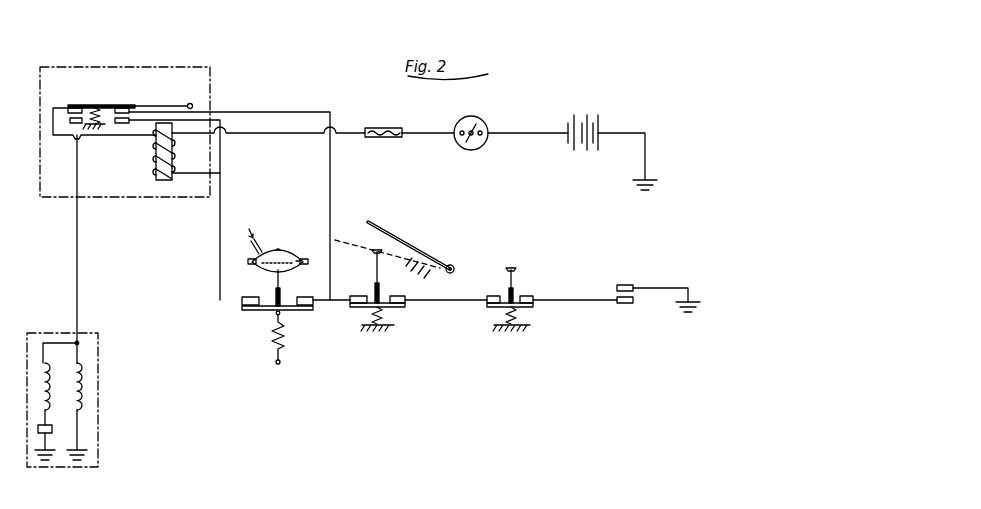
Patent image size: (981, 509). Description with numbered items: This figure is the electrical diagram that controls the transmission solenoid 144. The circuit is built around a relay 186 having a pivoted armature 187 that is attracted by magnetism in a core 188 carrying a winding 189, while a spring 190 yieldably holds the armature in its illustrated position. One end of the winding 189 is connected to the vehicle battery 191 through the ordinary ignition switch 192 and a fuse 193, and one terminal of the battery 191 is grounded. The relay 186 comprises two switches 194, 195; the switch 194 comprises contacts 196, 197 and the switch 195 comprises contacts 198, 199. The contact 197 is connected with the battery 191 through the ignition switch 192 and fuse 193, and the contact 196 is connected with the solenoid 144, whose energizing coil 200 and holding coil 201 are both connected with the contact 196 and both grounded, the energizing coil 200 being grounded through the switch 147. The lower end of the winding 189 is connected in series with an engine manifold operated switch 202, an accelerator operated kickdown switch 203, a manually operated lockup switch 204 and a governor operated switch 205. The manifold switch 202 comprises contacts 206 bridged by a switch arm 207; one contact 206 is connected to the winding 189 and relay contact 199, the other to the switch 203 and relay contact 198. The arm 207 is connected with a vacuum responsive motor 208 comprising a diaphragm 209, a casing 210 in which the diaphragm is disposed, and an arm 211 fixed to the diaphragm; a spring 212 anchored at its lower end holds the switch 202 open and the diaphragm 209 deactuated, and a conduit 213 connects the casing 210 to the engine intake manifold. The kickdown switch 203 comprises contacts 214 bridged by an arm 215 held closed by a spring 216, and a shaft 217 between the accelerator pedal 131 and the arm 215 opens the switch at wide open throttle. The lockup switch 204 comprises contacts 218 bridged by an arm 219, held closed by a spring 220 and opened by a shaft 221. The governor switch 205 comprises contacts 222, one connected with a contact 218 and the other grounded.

The accelerator pedal 131 is at (422, 246).
The electric solenoid 144 is at (99, 385).
The electric switch 147 is at (62, 432).
The relay 186 is at (162, 68).
The pivoted armature 187 is at (173, 104).
The core 188 is at (166, 182).
The winding 189 is at (155, 160).
The spring 190 is at (95, 105).
The vehicle battery 191 is at (601, 117).
The ignition switch 192 is at (481, 123).
The fuse 193 is at (380, 127).
The relay switch 194 is at (62, 119).
The relay switch 195 is at (118, 128).
The contact 196 is at (75, 125).
The contact 197 is at (71, 108).
The contact 198 is at (125, 107).
The contact 199 is at (130, 125).
The energizing coil 200 is at (39, 358).
The holding coil 201 is at (82, 366).
The engine manifold operated switch 202 is at (249, 288).
The accelerator operated kickdown switch 203 is at (392, 301).
The manually operated lockup switch 204 is at (524, 294).
The governor operated switch 205 is at (650, 286).
The contacts 206 is at (250, 297).
The switch arm 207 is at (263, 311).
The vacuum responsive motor 208 is at (262, 270).
The diaphragm 209 is at (302, 258).
The casing 210 is at (284, 246).
The arm 211 is at (283, 285).
The spring 212 is at (272, 345).
The conduit 213 is at (268, 238).
The contacts 214 is at (358, 300).
The arm 215 is at (398, 308).
The spring 216 is at (372, 318).
The shaft 217 is at (375, 262).
The contacts 218 is at (535, 298).
The arm 219 is at (533, 307).
The spring 220 is at (508, 316).
The shaft 221 is at (512, 267).
The contacts 222 is at (634, 304).